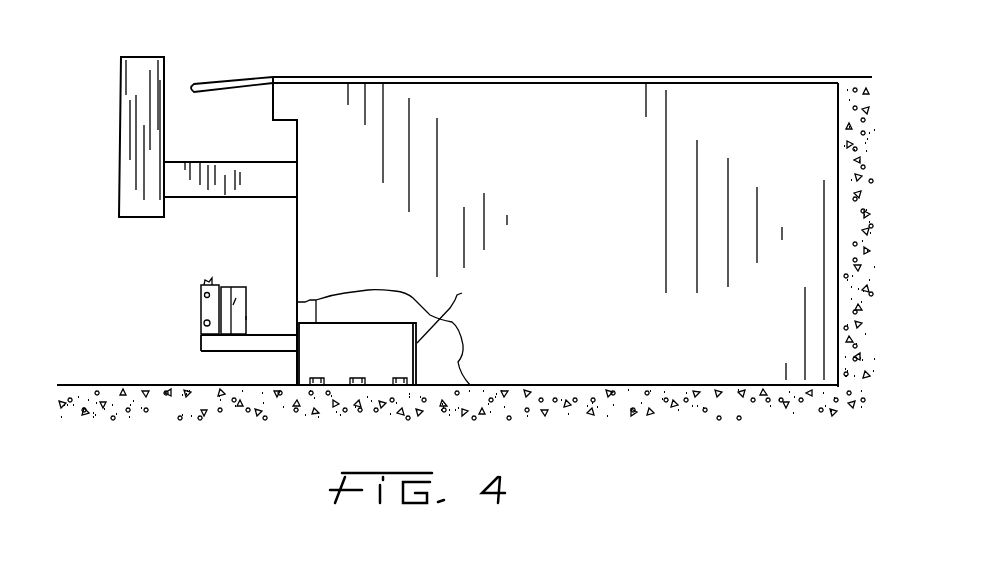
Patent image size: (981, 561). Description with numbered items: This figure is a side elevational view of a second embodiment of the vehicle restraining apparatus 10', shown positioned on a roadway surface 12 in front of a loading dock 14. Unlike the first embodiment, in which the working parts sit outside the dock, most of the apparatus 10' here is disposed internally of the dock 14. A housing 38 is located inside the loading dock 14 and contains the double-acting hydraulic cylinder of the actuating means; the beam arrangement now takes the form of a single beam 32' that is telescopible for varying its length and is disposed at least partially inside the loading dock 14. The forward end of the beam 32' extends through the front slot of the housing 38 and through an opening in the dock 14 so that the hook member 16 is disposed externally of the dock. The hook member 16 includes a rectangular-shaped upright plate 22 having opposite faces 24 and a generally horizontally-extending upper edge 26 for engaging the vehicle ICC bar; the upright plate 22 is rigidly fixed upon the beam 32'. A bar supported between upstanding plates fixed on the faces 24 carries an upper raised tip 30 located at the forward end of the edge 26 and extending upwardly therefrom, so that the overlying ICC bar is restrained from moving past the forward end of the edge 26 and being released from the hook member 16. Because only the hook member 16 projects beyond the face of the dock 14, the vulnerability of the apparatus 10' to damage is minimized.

The vehicle restraining apparatus 10' is at (161, 308).
The roadway surface 12 is at (86, 385).
The loading dock 14 is at (290, 216).
The hook member 16 is at (256, 276).
The upright plate 22 is at (246, 318).
The faces 24 is at (233, 305).
The upper edge 26 is at (230, 286).
The raised tip 30 is at (208, 281).
The beam 32' is at (226, 354).
The housing 38 is at (392, 336).